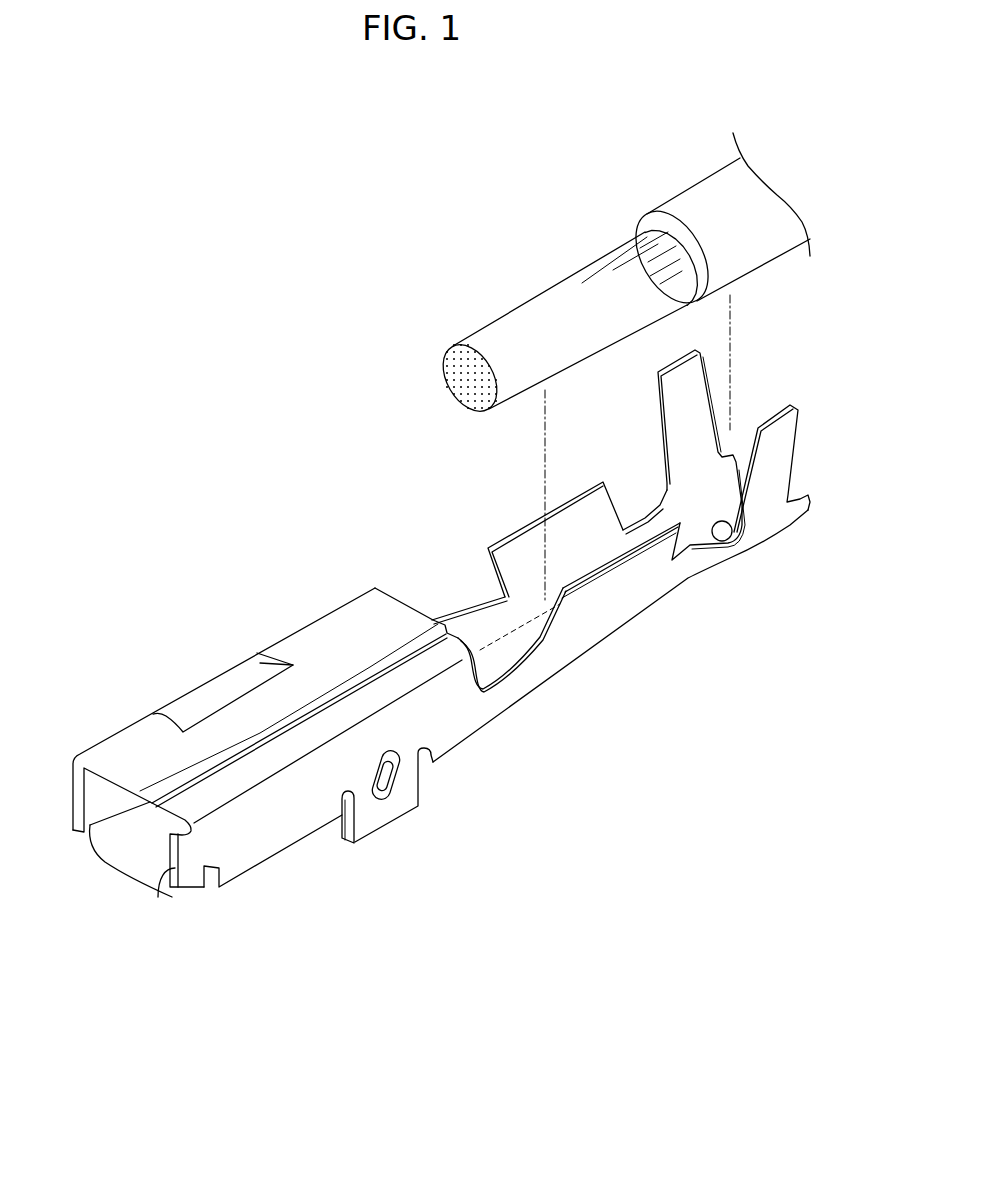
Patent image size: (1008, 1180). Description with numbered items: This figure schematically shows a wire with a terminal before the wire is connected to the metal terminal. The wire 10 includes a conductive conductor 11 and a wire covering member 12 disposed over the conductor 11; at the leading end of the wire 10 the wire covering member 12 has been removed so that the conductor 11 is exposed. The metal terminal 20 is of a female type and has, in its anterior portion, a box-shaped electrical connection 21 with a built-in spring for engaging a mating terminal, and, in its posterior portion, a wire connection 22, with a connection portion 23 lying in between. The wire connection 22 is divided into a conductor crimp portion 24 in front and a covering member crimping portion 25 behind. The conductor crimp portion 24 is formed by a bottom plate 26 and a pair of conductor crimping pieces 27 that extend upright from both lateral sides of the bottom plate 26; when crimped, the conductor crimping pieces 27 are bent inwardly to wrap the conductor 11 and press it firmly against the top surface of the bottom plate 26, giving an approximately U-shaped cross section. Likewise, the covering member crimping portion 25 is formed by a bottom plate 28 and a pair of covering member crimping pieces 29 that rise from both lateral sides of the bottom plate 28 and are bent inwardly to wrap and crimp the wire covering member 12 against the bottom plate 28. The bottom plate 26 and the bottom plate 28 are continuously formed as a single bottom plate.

The wire 10 is at (634, 277).
The conductor 11 is at (558, 293).
The wire covering member 12 is at (757, 243).
The metal terminal 20 is at (472, 596).
The electrical connection 21 is at (147, 740).
The wire connection 22 is at (695, 590).
The connection portion 23 is at (525, 677).
The conductor crimp portion 24 is at (517, 522).
The covering member crimping portion 25 is at (655, 393).
The bottom plate 26 is at (533, 617).
The conductor crimping pieces 27 is at (627, 573).
The bottom plate 28 is at (722, 542).
The covering member crimping pieces 29 is at (782, 427).